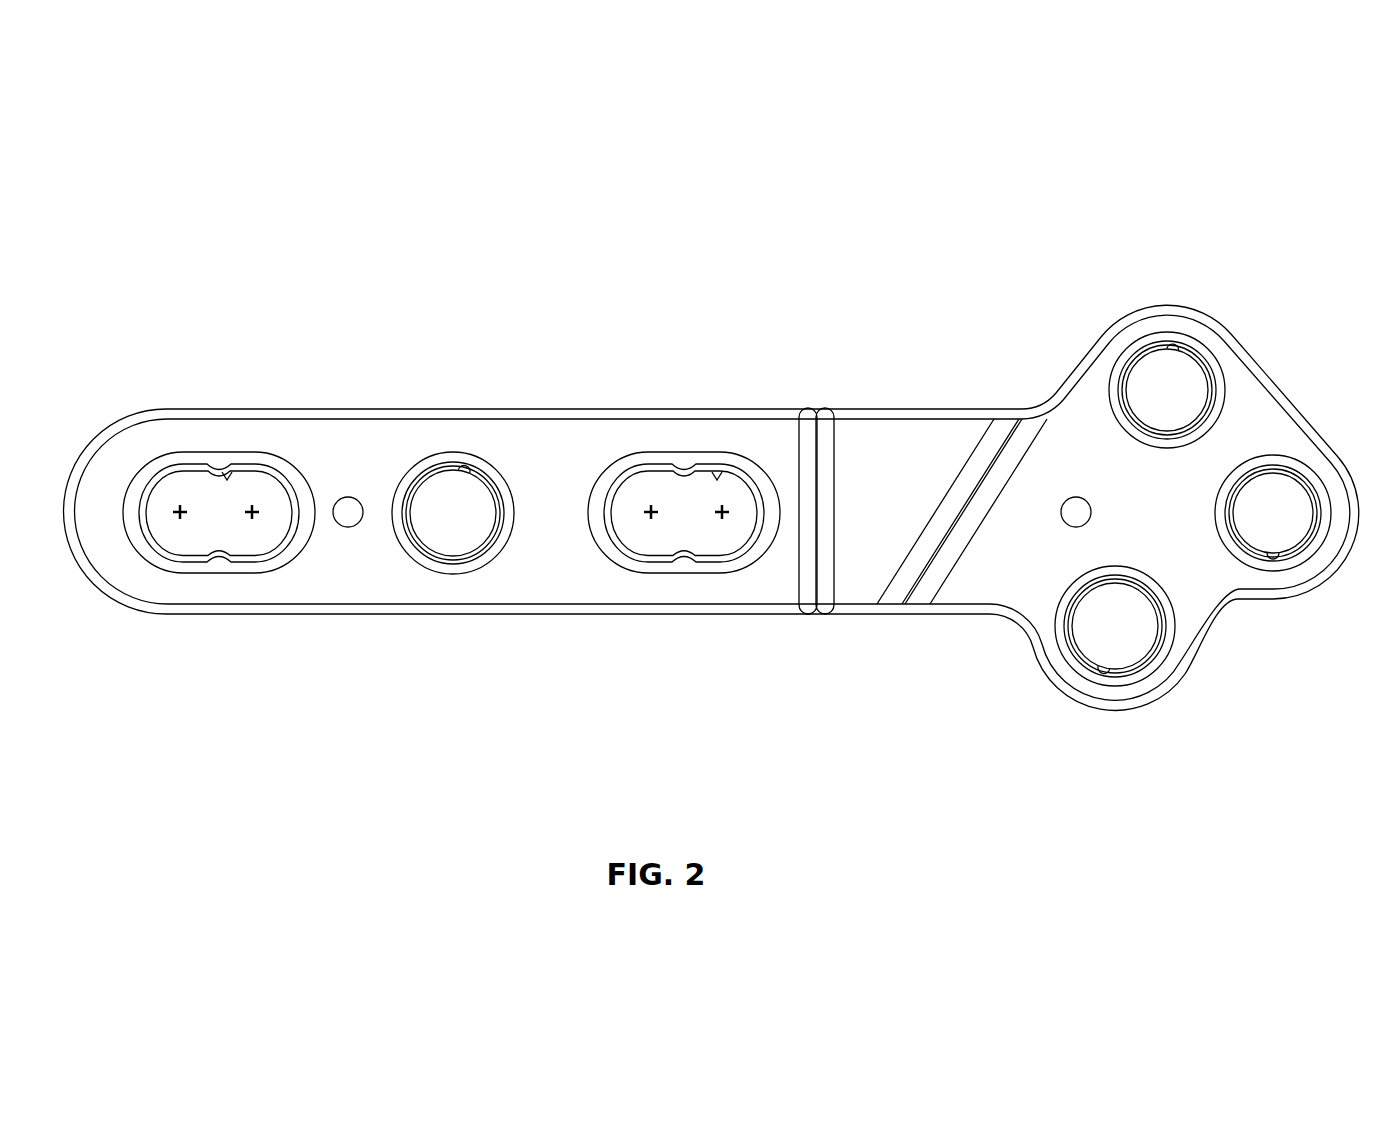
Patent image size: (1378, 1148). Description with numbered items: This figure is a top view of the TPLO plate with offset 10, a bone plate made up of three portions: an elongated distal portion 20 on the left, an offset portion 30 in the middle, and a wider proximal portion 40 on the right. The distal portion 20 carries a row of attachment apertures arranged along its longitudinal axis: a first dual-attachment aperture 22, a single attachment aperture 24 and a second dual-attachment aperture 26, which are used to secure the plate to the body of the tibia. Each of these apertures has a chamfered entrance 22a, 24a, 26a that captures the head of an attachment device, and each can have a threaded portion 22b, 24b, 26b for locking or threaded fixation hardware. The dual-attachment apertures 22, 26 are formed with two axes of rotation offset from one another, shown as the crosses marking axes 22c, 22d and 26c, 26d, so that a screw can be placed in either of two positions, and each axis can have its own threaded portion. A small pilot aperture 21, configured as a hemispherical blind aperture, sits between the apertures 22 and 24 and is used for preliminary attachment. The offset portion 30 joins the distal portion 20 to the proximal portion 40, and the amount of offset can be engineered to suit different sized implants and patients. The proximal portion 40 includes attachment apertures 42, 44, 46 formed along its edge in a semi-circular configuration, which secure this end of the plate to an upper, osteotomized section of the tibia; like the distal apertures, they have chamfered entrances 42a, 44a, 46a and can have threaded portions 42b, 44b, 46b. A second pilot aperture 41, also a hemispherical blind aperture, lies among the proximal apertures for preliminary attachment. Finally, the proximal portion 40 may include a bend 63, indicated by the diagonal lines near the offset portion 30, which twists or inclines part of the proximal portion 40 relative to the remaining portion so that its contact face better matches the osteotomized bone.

The TPLO plate with offset 10 is at (205, 147).
The distal portion 20 is at (277, 437).
The pilot aperture 21 is at (348, 513).
The dual-attachment aperture 22 is at (180, 485).
The chamfered entrance 22a is at (290, 548).
The threaded portion 22b is at (222, 478).
The axis of rotation 22c is at (190, 540).
The axis of rotation 22d is at (252, 540).
The single attachment aperture 24 is at (445, 503).
The chamfered entrance 24a is at (477, 555).
The threaded portion 24b is at (463, 473).
The dual-attachment aperture 26 is at (657, 483).
The chamfered entrance 26a is at (753, 552).
The threaded portion 26b is at (717, 480).
The axis of rotation 26c is at (657, 542).
The axis of rotation 26d is at (725, 538).
The offset portion 30 is at (827, 440).
The proximal portion 40 is at (923, 443).
The pilot aperture 41 is at (1061, 511).
The attachment aperture 42 is at (1150, 377).
The chamfered entrance 42a is at (1212, 367).
The threaded portion 42b is at (1163, 357).
The attachment aperture 44 is at (1297, 500).
The chamfered entrance 44a is at (1322, 533).
The threaded portion 44b is at (1262, 548).
The attachment aperture 46 is at (1080, 627).
The chamfered entrance 46a is at (1150, 660).
The threaded portion 46b is at (1103, 657).
The bend 63 is at (970, 452).